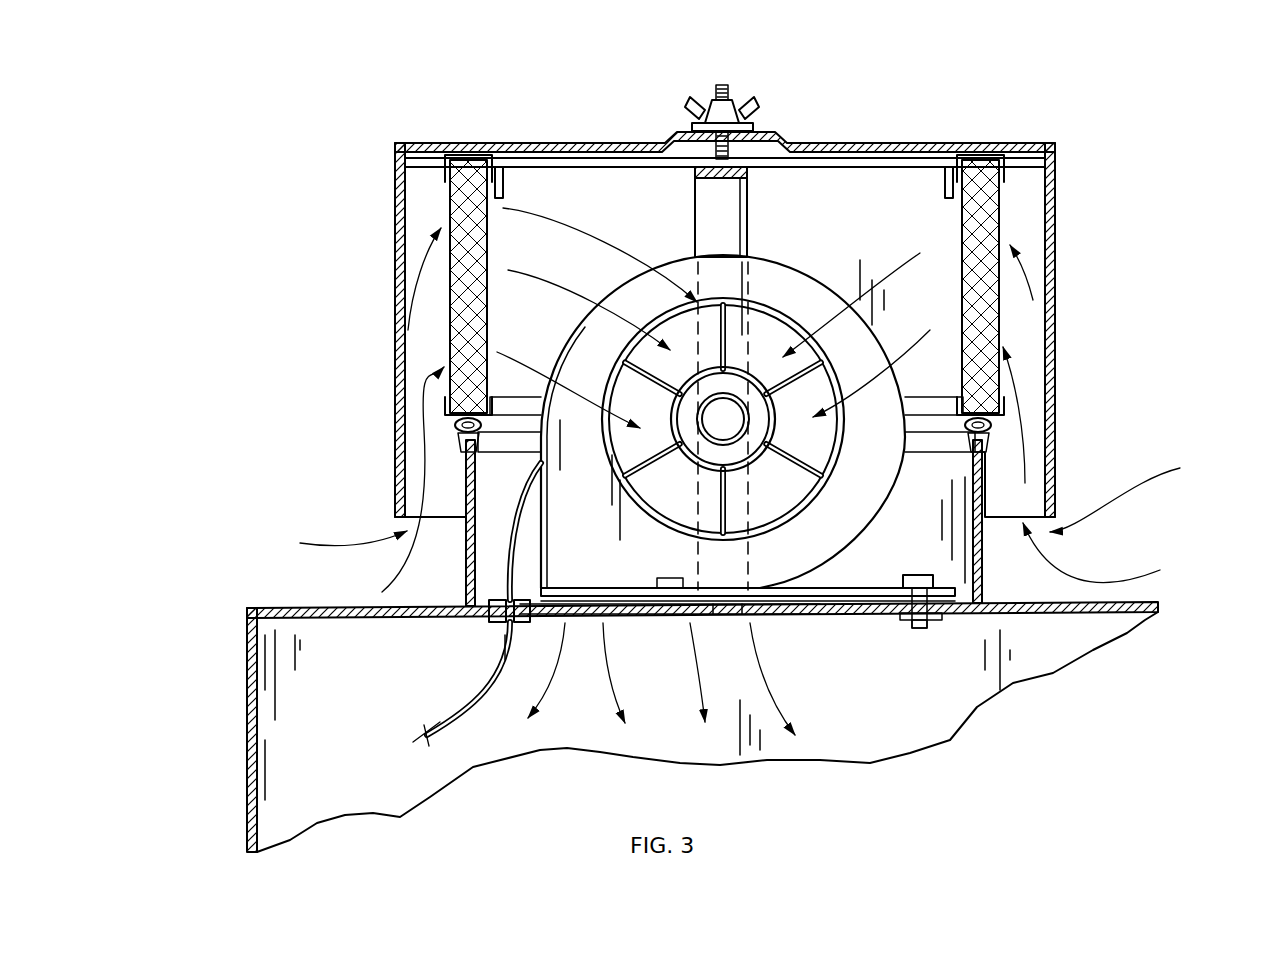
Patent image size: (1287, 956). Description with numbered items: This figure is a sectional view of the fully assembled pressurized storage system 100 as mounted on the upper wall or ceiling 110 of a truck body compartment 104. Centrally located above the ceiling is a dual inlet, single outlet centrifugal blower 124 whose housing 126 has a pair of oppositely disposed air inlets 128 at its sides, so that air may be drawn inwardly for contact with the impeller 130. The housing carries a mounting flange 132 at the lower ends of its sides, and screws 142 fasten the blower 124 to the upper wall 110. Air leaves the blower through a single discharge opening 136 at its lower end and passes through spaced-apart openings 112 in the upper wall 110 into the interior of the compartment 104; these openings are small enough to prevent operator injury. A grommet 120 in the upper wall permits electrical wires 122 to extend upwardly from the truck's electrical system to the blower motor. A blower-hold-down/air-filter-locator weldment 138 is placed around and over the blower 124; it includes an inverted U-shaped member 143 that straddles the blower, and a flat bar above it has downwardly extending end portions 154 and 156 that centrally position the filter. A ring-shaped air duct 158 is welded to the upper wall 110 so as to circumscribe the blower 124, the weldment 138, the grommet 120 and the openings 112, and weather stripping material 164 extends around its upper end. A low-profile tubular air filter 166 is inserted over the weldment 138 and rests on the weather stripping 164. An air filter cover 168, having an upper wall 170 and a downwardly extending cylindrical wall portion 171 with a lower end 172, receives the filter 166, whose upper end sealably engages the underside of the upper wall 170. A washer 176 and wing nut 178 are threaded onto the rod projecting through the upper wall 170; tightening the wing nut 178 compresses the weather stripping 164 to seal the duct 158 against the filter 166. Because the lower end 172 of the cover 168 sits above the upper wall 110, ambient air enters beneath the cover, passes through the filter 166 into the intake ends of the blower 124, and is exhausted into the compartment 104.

The pressurized storage system 100 is at (651, 282).
The truck body compartment 104 is at (290, 680).
The upper wall or ceiling 110 is at (1128, 599).
The openings 112 is at (742, 614).
The grommet 120 is at (523, 625).
The electrical wires 122 is at (470, 696).
The centrifugal blower 124 is at (835, 248).
The housing 126 is at (960, 560).
The air inlets 128 is at (785, 356).
The impeller 130 is at (666, 462).
The mounting flange 132 is at (795, 613).
The discharge opening 136 is at (673, 605).
The blower-hold-down/air-filter-locator weldment 138 is at (984, 562).
The screws 142 is at (930, 628).
The inverted U-shaped member 143 is at (705, 211).
The end portion 154 is at (500, 190).
The end portion 156 is at (952, 170).
The ring-shaped air duct 158 is at (463, 567).
The weather stripping material 164 is at (452, 425).
The low-profile tubular air filter 166 is at (995, 215).
The air filter cover 168 is at (392, 323).
The upper wall 170 is at (890, 140).
The cylindrical wall portion 171 is at (400, 381).
The lower end 172 is at (410, 527).
The washer 176 is at (760, 127).
The wing nut 178 is at (748, 100).